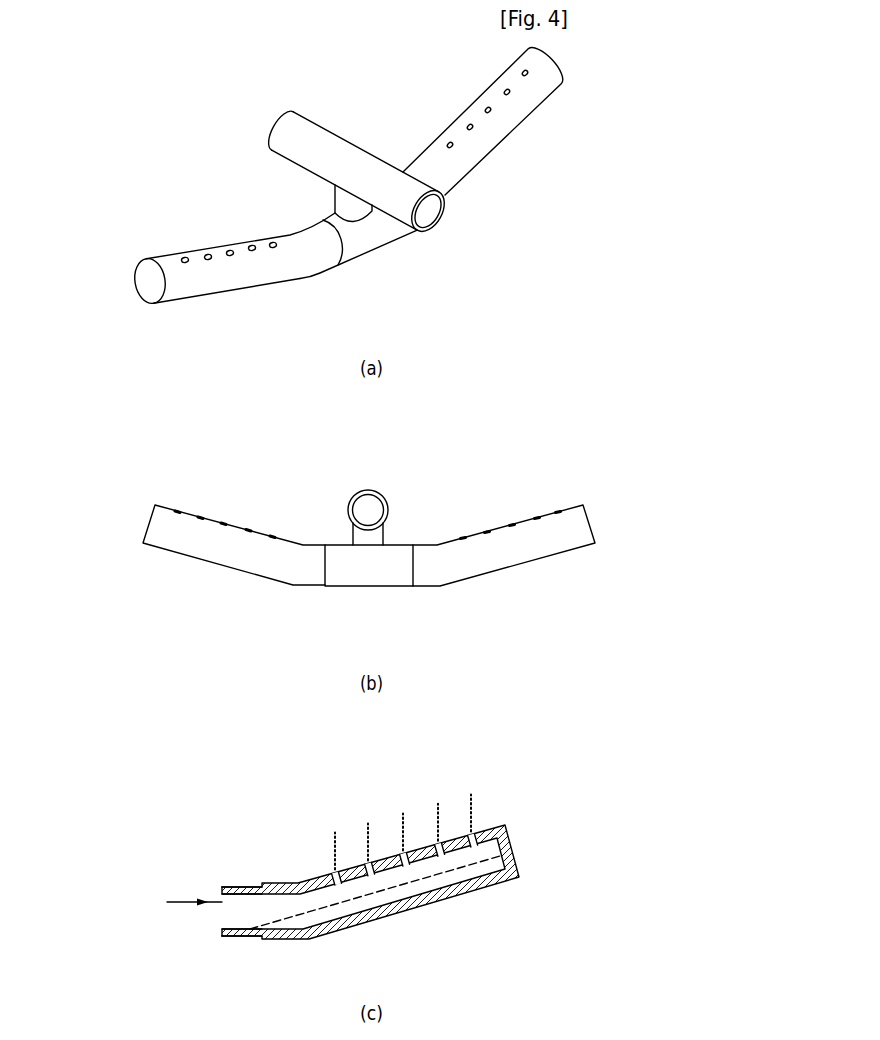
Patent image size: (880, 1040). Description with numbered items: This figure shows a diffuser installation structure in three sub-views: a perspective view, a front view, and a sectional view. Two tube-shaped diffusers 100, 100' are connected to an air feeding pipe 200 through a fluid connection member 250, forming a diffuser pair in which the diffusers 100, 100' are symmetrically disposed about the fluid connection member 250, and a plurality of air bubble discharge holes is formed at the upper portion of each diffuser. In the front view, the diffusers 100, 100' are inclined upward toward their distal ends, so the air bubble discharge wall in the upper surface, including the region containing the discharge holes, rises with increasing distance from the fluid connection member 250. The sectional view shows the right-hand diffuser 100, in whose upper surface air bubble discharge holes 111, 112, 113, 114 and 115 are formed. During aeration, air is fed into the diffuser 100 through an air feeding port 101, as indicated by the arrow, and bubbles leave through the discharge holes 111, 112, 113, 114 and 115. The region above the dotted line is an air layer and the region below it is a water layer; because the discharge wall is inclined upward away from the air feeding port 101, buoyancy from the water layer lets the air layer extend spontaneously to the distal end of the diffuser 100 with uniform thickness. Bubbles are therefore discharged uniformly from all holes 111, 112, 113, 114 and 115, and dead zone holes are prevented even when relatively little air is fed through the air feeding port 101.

The diffuser 100 is at (401, 501).
The diffuser 100' is at (231, 414).
The air feeding pipe 200 is at (317, 125).
The fluid connection member 250 is at (363, 235).
The air feeding port 101 is at (228, 915).
The air bubble discharge hole 111 is at (333, 869).
The air bubble discharge hole 112 is at (366, 862).
The air bubble discharge hole 113 is at (401, 852).
The air bubble discharge hole 114 is at (436, 843).
The air bubble discharge hole 115 is at (474, 833).